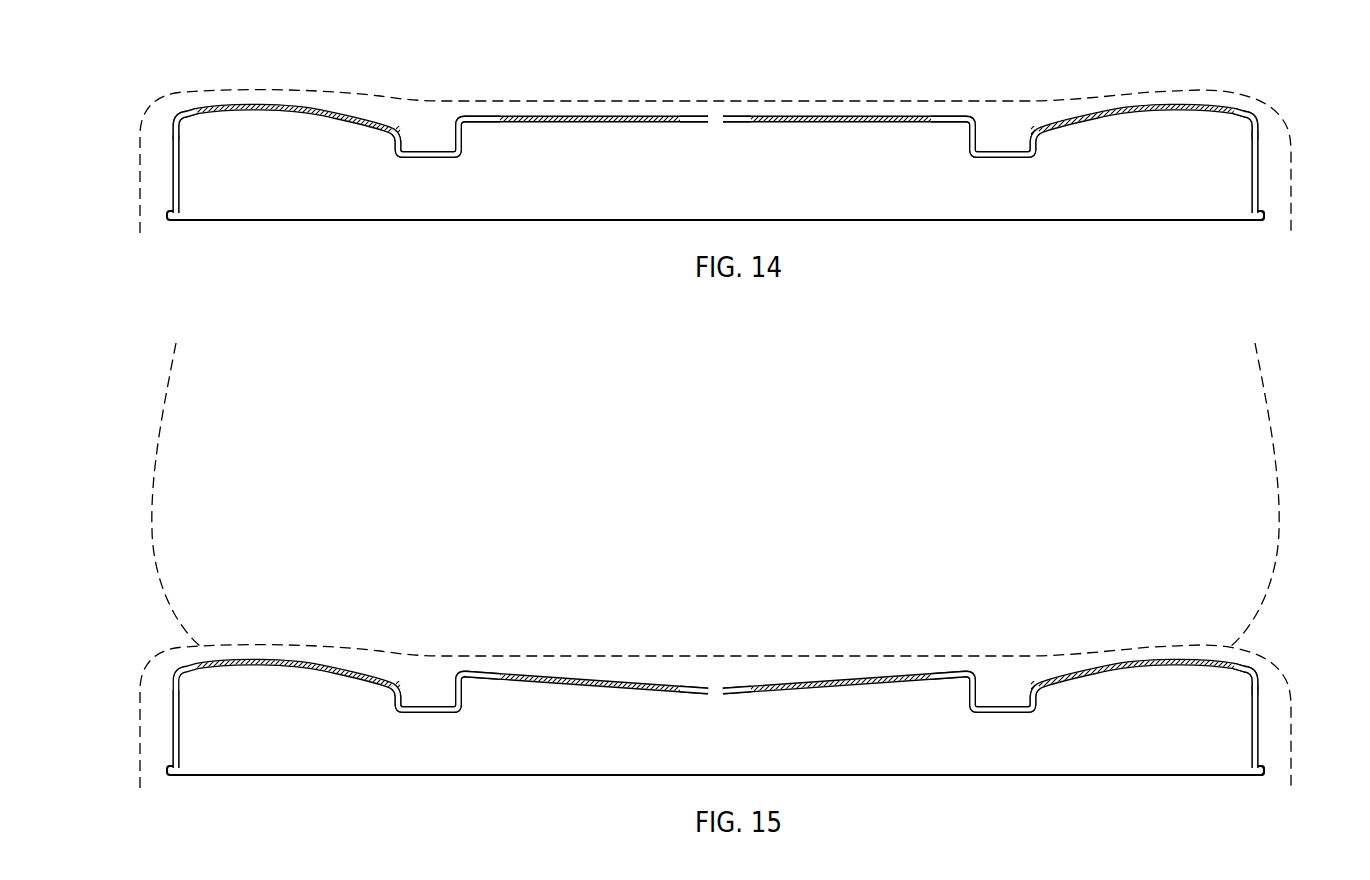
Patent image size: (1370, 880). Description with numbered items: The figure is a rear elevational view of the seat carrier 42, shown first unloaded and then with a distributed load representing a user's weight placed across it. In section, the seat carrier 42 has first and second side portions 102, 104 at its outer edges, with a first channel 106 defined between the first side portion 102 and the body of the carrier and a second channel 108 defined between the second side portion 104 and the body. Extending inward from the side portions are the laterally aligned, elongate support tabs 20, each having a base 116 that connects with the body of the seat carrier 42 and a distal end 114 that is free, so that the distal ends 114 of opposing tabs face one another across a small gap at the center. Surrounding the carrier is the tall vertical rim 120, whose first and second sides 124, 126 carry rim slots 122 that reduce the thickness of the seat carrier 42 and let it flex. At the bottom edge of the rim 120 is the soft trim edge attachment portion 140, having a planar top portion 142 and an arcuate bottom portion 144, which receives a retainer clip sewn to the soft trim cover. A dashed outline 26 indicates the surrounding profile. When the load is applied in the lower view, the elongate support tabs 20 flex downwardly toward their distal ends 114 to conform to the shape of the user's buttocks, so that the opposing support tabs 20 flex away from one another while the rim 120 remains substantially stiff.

In FIG. 14, the support tabs 20 is at (610, 116).
In FIG. 15, the support tabs 20 is at (715, 658).
In FIG. 14, the outline of vehicle body / trim 26 is at (195, 90).
In FIG. 15, the outline of vehicle body / trim 26 is at (714, 565).
In FIG. 14, the seat carrier 42 is at (1222, 98).
In FIG. 15, the seat carrier 42 is at (1256, 647).
In FIG. 14, the first side portion 102 is at (262, 104).
In FIG. 15, the first side portion 102 is at (328, 652).
In FIG. 14, the second side portion 104 is at (1158, 105).
In FIG. 15, the second side portion 104 is at (1104, 648).
In FIG. 14, the first channel 106 is at (430, 148).
In FIG. 15, the first channel 106 is at (426, 664).
In FIG. 14, the second channel 108 is at (1007, 144).
In FIG. 15, the second channel 108 is at (1002, 659).
In FIG. 14, the distal end 114 is at (705, 125).
In FIG. 15, the distal end 114 is at (716, 723).
In FIG. 14, the base 116 is at (483, 123).
In FIG. 15, the base 116 is at (715, 712).
In FIG. 14, the rim 120 is at (172, 185).
In FIG. 15, the rim 120 is at (138, 762).
In FIG. 14, the rim slots 122 is at (177, 122).
In FIG. 14, the first side 124 is at (172, 153).
In FIG. 15, the first side 124 is at (140, 720).
In FIG. 14, the second side 126 is at (1260, 157).
In FIG. 15, the second side 126 is at (1293, 699).
In FIG. 14, the soft trim edge attachment portion 140 is at (1262, 215).
In FIG. 15, the soft trim edge attachment portion 140 is at (1288, 781).
In FIG. 14, the planar top portion 142 is at (1262, 213).
In FIG. 15, the planar top portion 142 is at (1297, 749).
In FIG. 14, the arcuate bottom portion 144 is at (1261, 222).
In FIG. 15, the arcuate bottom portion 144 is at (723, 807).